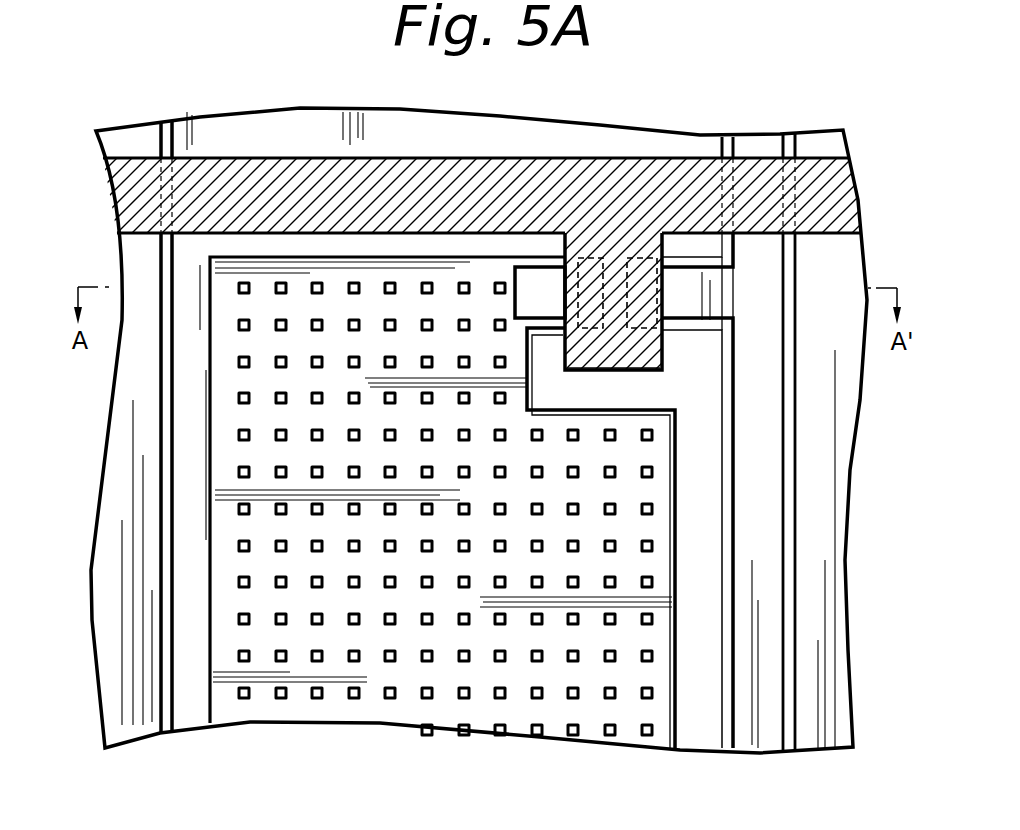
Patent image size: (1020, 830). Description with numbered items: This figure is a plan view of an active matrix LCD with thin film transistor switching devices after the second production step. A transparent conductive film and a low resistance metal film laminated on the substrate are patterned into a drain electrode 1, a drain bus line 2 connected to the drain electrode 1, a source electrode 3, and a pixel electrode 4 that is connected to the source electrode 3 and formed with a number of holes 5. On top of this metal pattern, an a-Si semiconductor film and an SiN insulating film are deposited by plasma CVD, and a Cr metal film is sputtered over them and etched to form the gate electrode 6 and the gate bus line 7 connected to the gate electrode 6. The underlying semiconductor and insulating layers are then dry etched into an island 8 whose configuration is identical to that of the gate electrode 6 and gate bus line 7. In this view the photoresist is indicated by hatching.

The drain electrode 1 is at (709, 268).
The drain bus line 2 is at (770, 727).
The source electrode 3 is at (547, 283).
The pixel electrode 4 is at (226, 703).
The holes 5 is at (353, 700).
The gate electrode 6 is at (627, 353).
The gate bus line 7 is at (868, 199).
The island 8 is at (653, 373).